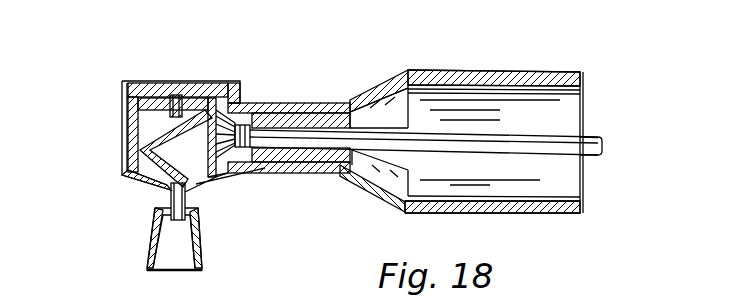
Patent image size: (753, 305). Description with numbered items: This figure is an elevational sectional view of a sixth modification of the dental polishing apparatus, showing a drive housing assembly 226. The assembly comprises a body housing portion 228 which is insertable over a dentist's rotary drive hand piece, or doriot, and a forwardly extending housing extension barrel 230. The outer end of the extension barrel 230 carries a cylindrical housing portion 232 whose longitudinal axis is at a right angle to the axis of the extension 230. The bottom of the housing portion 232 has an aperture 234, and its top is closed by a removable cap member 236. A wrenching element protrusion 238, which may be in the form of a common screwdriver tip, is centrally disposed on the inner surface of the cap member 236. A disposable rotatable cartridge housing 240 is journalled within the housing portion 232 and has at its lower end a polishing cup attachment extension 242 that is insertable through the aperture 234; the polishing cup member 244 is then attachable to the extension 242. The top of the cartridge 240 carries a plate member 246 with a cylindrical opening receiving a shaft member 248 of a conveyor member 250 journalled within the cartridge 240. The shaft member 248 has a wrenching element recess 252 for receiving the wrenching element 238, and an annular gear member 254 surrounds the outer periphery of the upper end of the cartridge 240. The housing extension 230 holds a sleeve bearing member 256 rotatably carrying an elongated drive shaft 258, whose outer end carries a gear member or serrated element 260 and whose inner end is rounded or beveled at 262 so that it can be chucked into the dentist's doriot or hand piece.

The drive housing assembly 226 is at (375, 78).
The body housing portion 228 is at (487, 80).
The housing extension barrel 230 is at (312, 172).
The cylindrical housing portion 232 is at (122, 138).
The aperture 234 is at (168, 193).
The removable cap member 236 is at (138, 82).
The wrenching element protrusion 238 is at (162, 83).
The disposable rotatable cartridge housing 240 is at (138, 120).
The polishing cup attachment extension 242 is at (190, 202).
The polishing cup member 244 is at (202, 258).
The plate member 246 is at (147, 100).
The shaft member 248 is at (208, 93).
The conveyor member 250 is at (140, 150).
The wrenching element recess 252 is at (176, 95).
The annular gear member 254 is at (238, 103).
The sleeve bearing member 256 is at (302, 117).
The drive shaft 258 is at (545, 143).
The gear member or serrated element 260 is at (238, 163).
The rounded or beveled end 262 is at (602, 140).